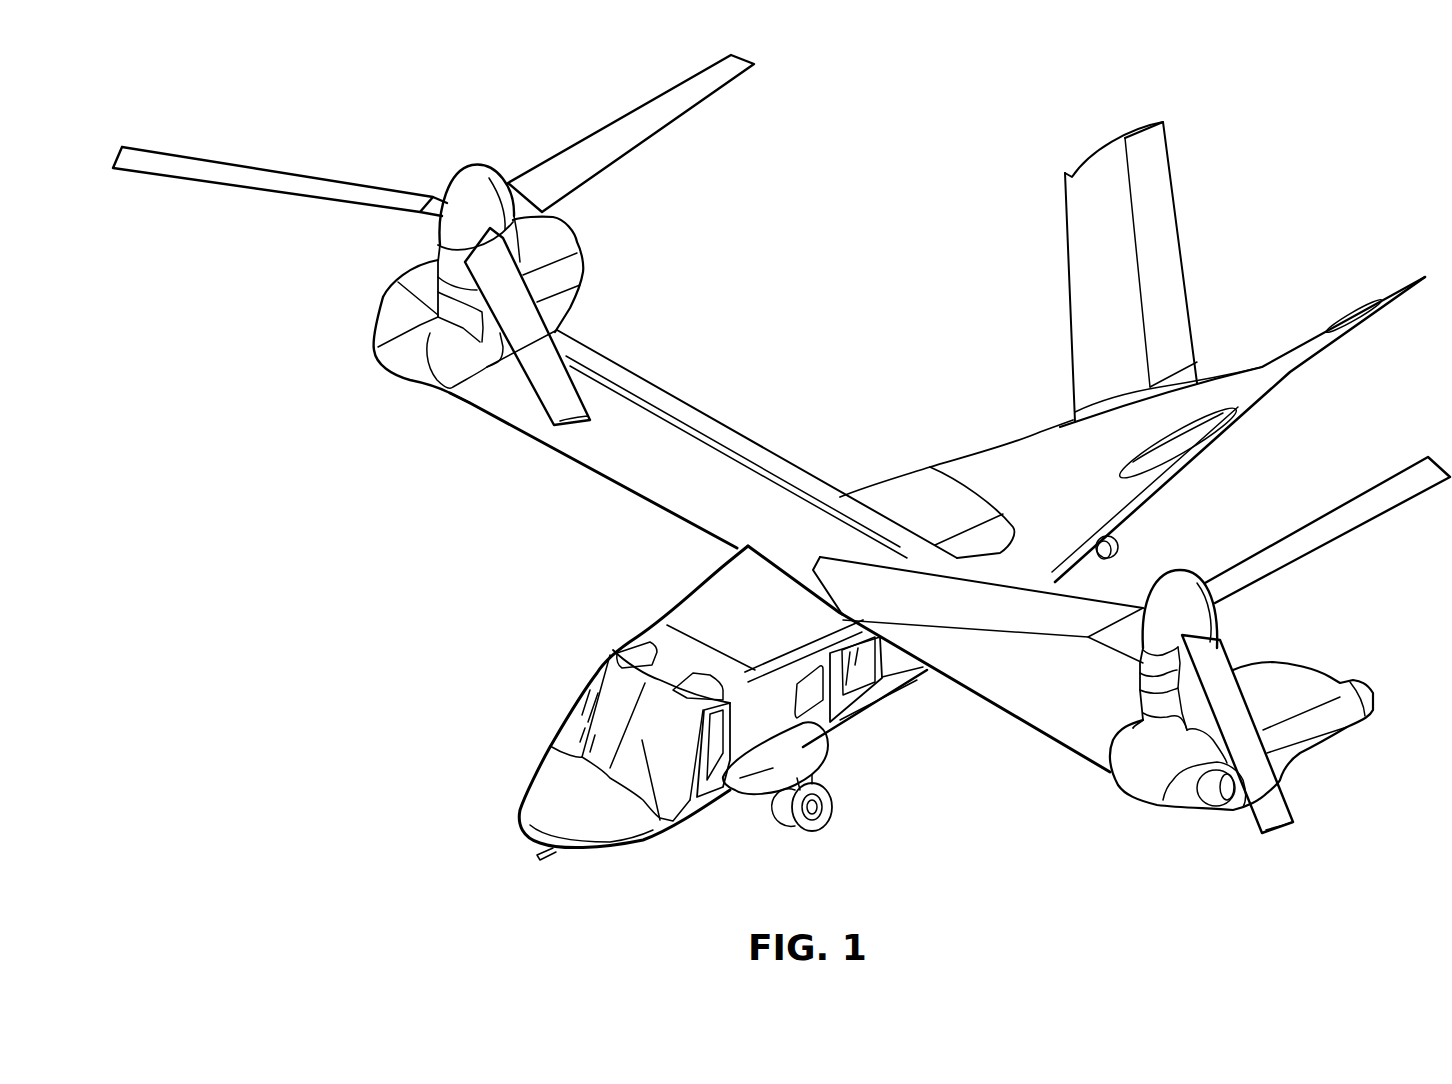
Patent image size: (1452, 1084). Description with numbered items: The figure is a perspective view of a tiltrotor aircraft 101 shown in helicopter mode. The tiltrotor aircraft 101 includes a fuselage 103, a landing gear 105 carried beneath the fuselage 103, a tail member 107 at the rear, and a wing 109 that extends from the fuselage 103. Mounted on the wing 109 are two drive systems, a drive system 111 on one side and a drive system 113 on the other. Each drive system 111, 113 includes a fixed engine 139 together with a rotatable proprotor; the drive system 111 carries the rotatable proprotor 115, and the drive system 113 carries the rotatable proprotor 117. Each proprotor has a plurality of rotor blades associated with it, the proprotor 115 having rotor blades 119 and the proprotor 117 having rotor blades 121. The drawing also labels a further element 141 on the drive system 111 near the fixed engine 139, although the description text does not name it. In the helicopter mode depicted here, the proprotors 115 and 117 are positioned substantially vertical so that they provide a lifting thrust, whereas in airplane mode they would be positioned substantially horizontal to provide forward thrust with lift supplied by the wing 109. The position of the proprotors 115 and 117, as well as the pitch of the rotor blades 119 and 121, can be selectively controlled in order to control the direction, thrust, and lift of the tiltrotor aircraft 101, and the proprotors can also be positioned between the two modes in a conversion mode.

The tiltrotor aircraft 101 is at (1258, 103).
The fuselage 103 is at (603, 850).
The landing gear 105 is at (813, 832).
The tail member 107 is at (1182, 227).
The wing 109 is at (1010, 712).
The drive system 111 is at (1134, 846).
The drive system 113 is at (360, 241).
The rotatable proprotor 115 is at (1222, 633).
The rotatable proprotor 117 is at (478, 162).
The rotor blades 119 is at (1408, 503).
The rotor blades 121 is at (618, 118).
The fixed engine 139 is at (1323, 760).
The exhaust 141 is at (1207, 805).